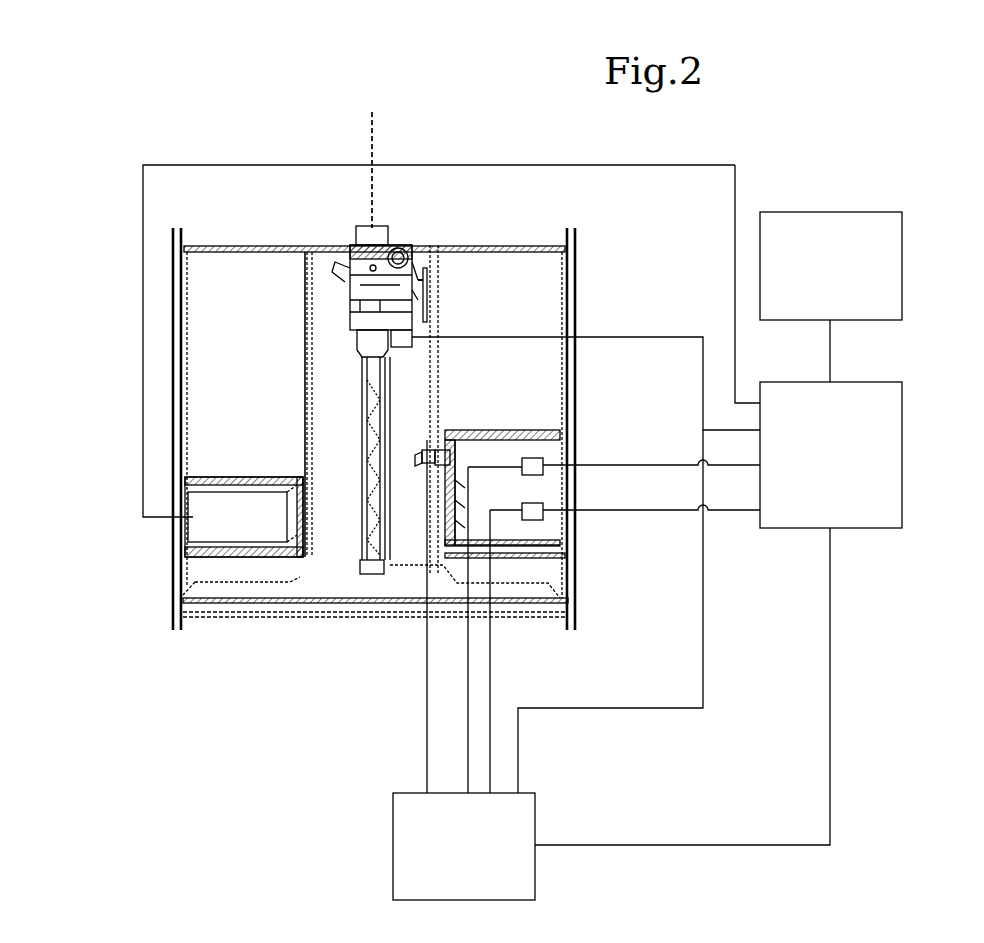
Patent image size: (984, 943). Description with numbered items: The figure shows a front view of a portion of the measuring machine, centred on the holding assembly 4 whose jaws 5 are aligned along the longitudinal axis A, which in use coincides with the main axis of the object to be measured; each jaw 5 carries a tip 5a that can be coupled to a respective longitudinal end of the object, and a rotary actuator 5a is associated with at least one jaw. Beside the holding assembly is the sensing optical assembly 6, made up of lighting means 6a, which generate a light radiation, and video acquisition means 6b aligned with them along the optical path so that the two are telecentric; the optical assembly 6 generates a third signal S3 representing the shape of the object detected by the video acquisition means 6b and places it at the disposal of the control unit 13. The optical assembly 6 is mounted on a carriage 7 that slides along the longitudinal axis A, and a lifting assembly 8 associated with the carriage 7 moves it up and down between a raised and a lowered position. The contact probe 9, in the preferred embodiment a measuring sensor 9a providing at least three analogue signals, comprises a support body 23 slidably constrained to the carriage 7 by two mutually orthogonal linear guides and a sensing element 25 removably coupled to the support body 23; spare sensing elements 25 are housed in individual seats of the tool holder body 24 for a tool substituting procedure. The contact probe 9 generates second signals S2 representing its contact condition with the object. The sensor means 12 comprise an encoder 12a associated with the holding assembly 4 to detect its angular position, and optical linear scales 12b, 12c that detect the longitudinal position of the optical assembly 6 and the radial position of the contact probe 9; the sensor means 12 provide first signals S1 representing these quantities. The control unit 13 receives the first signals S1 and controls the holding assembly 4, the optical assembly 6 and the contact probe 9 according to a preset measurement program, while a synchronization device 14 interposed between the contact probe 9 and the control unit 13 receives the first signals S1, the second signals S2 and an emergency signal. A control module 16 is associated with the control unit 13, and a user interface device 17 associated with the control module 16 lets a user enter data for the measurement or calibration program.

The holding assembly 4 is at (362, 217).
The longitudinal axis A is at (372, 126).
The third signal S3 is at (521, 165).
The jaw 5 is at (370, 338).
The tip 5a is at (365, 262).
The sensing element 25 is at (420, 250).
The tool holder body 24 is at (422, 268).
The encoder 12a is at (410, 337).
The contact probe 9 is at (442, 450).
The measuring sensor 9a is at (415, 457).
The optical linear scale 12b is at (530, 462).
The optical linear scale 12c is at (530, 507).
The sensor means 12 is at (968, 588).
The lifting assembly 8 is at (302, 478).
The carriage 7 is at (196, 475).
The sensing optical assembly 6 is at (228, 527).
The video acquisition means 6b is at (233, 512).
The lighting means 6a is at (452, 493).
The support body 23 is at (420, 458).
The user interface device 17 is at (831, 297).
The control module 16 is at (903, 265).
The control unit 13 is at (718, 613).
The synchronization device 14 is at (548, 665).
The first signals S1 is at (530, 757).
The second signals S2 is at (427, 708).